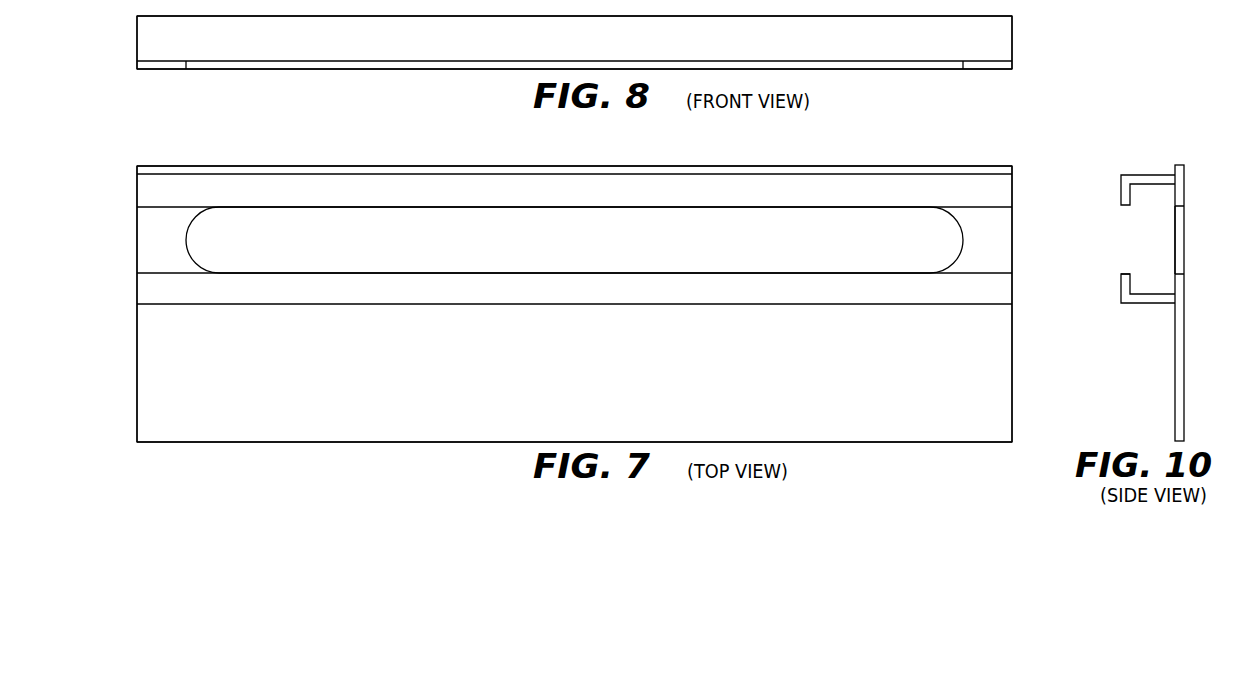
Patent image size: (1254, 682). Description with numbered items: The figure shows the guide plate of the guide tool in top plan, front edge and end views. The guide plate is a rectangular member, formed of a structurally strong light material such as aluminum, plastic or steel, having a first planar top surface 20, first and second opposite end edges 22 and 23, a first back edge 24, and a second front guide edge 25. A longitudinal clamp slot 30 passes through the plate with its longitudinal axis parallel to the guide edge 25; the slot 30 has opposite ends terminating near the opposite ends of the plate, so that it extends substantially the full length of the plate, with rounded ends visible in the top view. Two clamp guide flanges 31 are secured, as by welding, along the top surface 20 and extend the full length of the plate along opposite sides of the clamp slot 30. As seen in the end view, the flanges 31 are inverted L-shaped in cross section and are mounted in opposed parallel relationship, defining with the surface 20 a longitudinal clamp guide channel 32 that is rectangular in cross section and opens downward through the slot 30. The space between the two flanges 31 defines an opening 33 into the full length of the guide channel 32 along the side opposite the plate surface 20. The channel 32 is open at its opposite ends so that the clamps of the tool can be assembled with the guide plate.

In FIG. 8, the first planar top surface 20 is at (574, 42).
In FIG. 7, the first planar top surface 20 is at (852, 410).
In FIG. 10, the first planar top surface 20 is at (1175, 378).
In FIG. 8, the first end edge 22 is at (137, 62).
In FIG. 7, the first end edge 22 is at (137, 380).
In FIG. 8, the second end edge 23 is at (1012, 62).
In FIG. 7, the second end edge 23 is at (1013, 348).
In FIG. 7, the first back edge 24 is at (391, 166).
In FIG. 8, the second front guide edge 25 is at (277, 62).
In FIG. 7, the second front guide edge 25 is at (341, 443).
In FIG. 8, the longitudinal clamp slot 30 is at (188, 62).
In FIG. 7, the longitudinal clamp slot 30 is at (190, 250).
In FIG. 10, the longitudinal clamp slot 30 is at (1175, 270).
In FIG. 8, the clamp guide flanges 31 is at (1003, 33).
In FIG. 7, the clamp guide flanges 31 is at (143, 191).
In FIG. 10, the clamp guide flanges 31 is at (1149, 178).
In FIG. 10, the clamp guide channel 32 is at (1157, 221).
In FIG. 7, the opening 33 is at (163, 273).
In FIG. 10, the opening 33 is at (1127, 270).